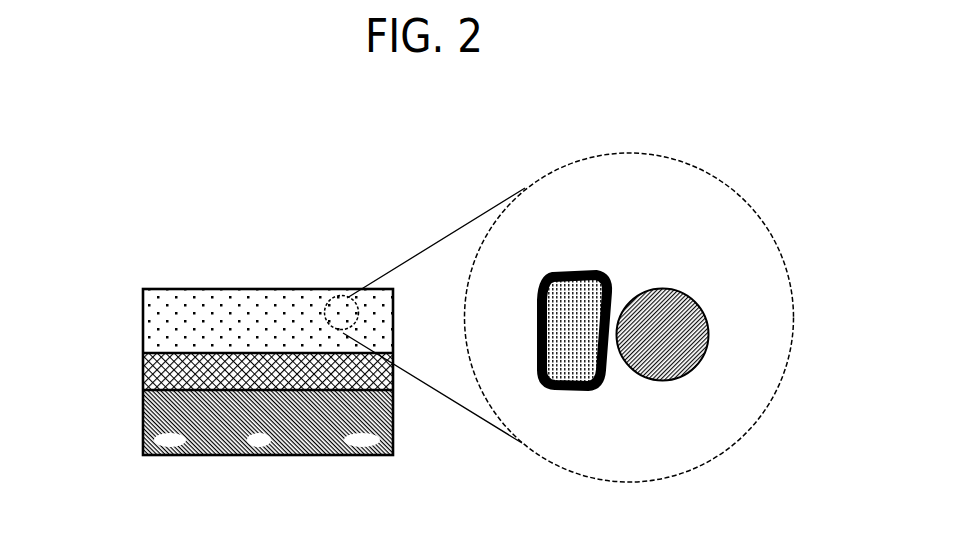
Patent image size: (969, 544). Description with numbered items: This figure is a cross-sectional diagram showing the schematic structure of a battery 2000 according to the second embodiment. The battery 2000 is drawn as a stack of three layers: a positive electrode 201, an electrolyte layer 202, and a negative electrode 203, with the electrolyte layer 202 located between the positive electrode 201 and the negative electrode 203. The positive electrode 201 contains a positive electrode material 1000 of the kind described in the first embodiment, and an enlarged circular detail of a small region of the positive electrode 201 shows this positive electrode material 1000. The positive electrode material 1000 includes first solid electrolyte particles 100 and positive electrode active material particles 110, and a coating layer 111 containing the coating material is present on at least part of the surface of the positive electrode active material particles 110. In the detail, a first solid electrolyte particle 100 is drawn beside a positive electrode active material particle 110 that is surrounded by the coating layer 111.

The battery 2000 is at (220, 288).
The positive electrode 201 is at (173, 307).
The electrolyte layer 202 is at (173, 375).
The negative electrode 203 is at (173, 425).
The positive electrode material 1000 is at (622, 309).
The first solid electrolyte particles 100 is at (682, 315).
The positive electrode active material particles 110 is at (548, 353).
The coating layer 111 is at (570, 388).